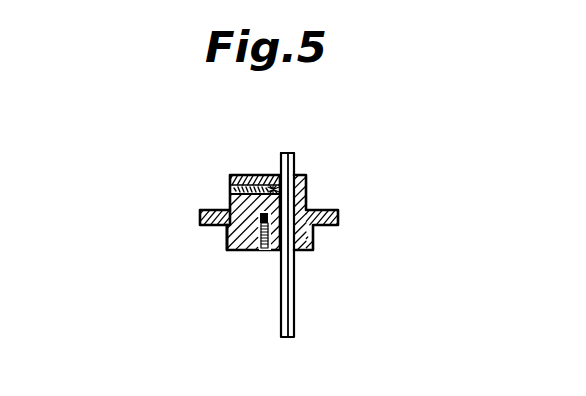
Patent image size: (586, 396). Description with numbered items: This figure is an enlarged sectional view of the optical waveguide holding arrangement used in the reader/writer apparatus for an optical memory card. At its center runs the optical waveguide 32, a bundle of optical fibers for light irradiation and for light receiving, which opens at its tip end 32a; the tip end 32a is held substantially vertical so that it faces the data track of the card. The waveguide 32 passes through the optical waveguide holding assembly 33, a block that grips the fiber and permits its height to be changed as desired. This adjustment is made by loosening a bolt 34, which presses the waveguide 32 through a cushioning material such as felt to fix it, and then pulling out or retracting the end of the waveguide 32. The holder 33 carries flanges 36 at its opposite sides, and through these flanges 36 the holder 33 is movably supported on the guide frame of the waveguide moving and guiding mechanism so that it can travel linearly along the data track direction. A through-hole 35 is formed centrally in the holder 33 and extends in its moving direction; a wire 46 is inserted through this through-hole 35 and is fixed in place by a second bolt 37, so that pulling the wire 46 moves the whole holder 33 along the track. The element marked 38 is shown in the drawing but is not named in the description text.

The optical waveguide 32 is at (296, 303).
The tip end of the optical waveguide 32a is at (289, 152).
The optical waveguide holding assembly 33 is at (306, 176).
The bolt 34 is at (231, 189).
The through-hole 35 is at (231, 250).
The flanges 36 is at (200, 223).
The bolt 37 is at (263, 250).
The cap member 38 is at (272, 175).
The wire 46 is at (227, 232).